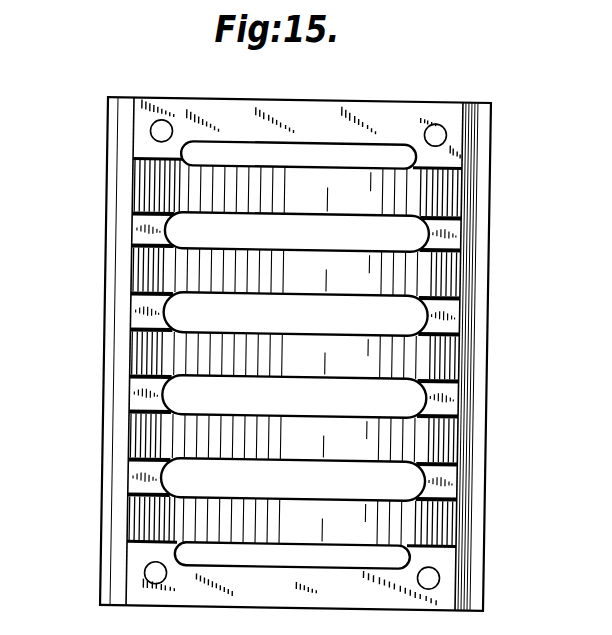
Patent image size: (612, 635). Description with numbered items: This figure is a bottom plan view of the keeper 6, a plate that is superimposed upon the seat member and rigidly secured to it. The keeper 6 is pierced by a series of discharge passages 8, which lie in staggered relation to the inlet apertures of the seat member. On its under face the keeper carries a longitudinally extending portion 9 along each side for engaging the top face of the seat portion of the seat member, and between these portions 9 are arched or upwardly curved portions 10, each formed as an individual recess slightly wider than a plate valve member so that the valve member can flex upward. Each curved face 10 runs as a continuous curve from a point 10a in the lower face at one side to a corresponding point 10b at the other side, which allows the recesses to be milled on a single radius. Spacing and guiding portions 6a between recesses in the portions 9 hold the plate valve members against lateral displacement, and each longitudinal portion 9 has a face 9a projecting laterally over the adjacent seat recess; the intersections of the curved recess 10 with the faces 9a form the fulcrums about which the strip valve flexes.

The keeper 6 is at (341, 102).
The spacing and guiding portions 6a is at (150, 295).
The discharge passages 8 is at (335, 541).
The longitudinally extending portion 9 is at (455, 483).
The face 9a is at (113, 492).
The arched or upwardly curved portions 10 is at (295, 355).
The point in the lower face of the keeper at one side 10a is at (130, 357).
The corresponding point in the lower face of the keeper at the other side 10b is at (463, 362).